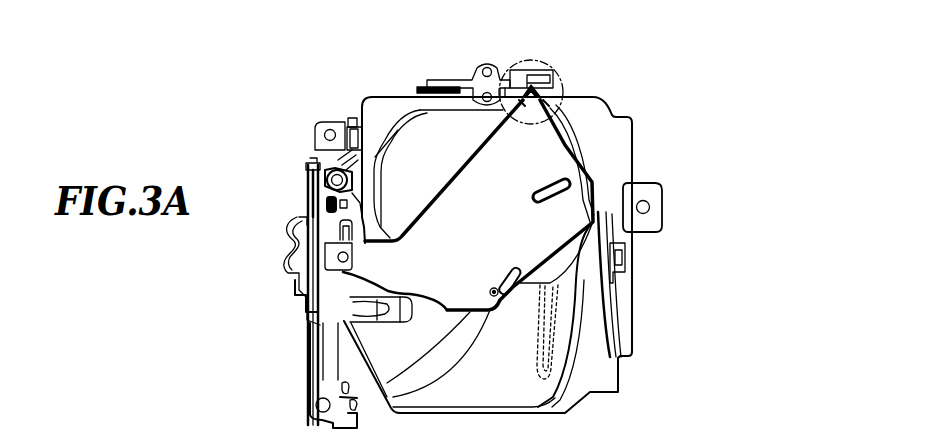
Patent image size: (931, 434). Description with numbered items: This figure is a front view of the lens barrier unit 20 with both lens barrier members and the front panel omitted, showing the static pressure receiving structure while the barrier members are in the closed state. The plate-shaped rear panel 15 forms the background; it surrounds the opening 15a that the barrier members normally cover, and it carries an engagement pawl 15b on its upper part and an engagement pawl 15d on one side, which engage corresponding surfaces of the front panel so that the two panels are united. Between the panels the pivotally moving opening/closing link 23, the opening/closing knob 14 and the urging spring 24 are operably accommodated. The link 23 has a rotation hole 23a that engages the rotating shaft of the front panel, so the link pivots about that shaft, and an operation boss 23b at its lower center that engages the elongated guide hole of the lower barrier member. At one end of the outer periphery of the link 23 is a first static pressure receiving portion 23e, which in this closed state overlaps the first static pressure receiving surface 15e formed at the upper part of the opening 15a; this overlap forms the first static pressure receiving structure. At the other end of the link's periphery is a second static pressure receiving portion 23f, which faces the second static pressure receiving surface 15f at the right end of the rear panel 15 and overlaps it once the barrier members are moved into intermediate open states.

The door latch unit 20 is at (331, 89).
The rear panel 15 is at (590, 118).
The opening 15a is at (410, 140).
The engagement pawl 15b is at (525, 73).
The first static pressure receiving surface 15e is at (535, 87).
The second static pressure receiving surface 15f is at (597, 220).
The engagement pawl 15d is at (622, 260).
The opening/closing knob 14 is at (293, 252).
The urging spring 24 is at (335, 165).
The opening/closing link 23 is at (368, 263).
The rotation hole 23a is at (340, 260).
The operation boss 23b is at (498, 295).
The first static pressure receiving portion 23e is at (537, 100).
The second static pressure receiving portion 23f is at (580, 198).